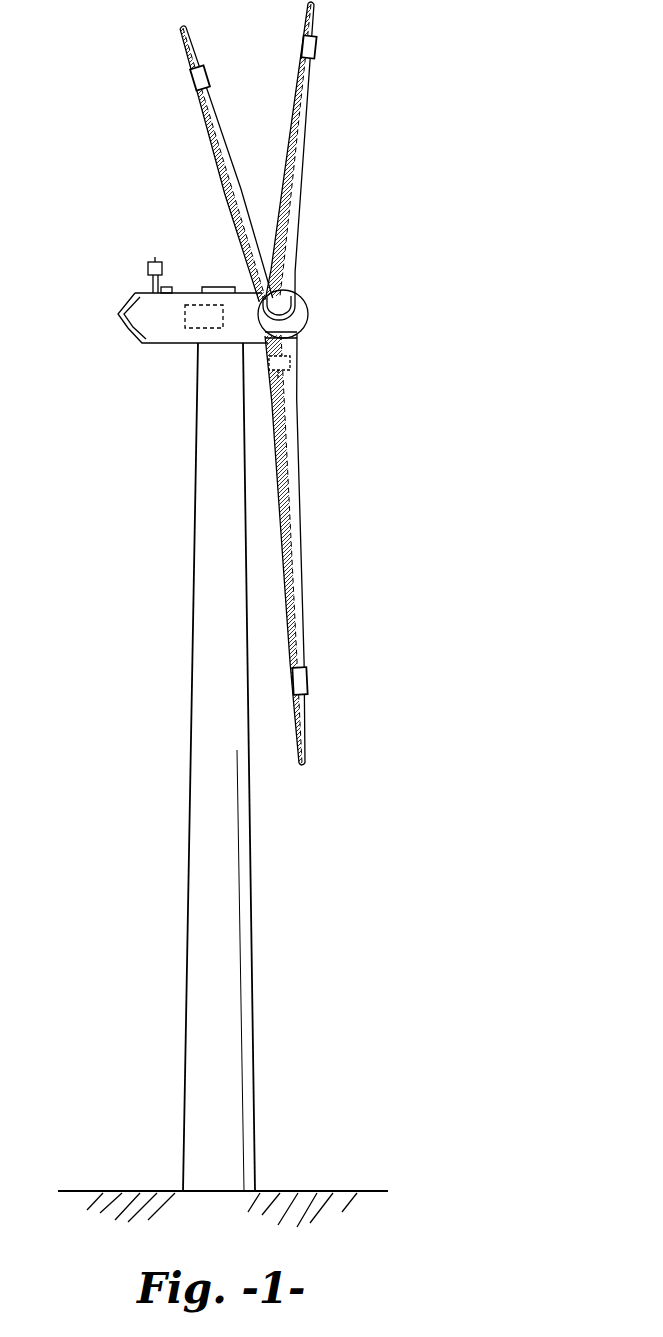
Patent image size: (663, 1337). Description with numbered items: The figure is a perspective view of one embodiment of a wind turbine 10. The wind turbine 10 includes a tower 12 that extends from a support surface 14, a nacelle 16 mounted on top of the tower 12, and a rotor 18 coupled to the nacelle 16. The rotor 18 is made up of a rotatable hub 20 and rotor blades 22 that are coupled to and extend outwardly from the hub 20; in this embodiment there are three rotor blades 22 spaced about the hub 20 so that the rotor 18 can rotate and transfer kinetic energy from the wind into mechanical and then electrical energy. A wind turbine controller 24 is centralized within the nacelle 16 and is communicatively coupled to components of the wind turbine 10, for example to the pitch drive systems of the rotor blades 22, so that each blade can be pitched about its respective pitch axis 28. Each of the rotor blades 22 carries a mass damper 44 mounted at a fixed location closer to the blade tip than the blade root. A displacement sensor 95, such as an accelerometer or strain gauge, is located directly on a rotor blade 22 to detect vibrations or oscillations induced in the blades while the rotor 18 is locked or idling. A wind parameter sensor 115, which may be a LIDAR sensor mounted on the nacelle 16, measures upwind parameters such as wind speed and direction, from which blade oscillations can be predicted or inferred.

The wind turbine 10 is at (443, 86).
The tower 12 is at (205, 835).
The support surface 14 is at (137, 1190).
The nacelle 16 is at (162, 344).
The rotor 18 is at (313, 290).
The rotatable hub 20 is at (312, 327).
The rotor blade 22 is at (230, 142).
The wind turbine controller 24 is at (190, 317).
The pitch axis 28 is at (233, 225).
The mass damper 44 is at (192, 80).
The displacement sensor 95 is at (280, 374).
The wind parameter sensor 115 is at (166, 290).